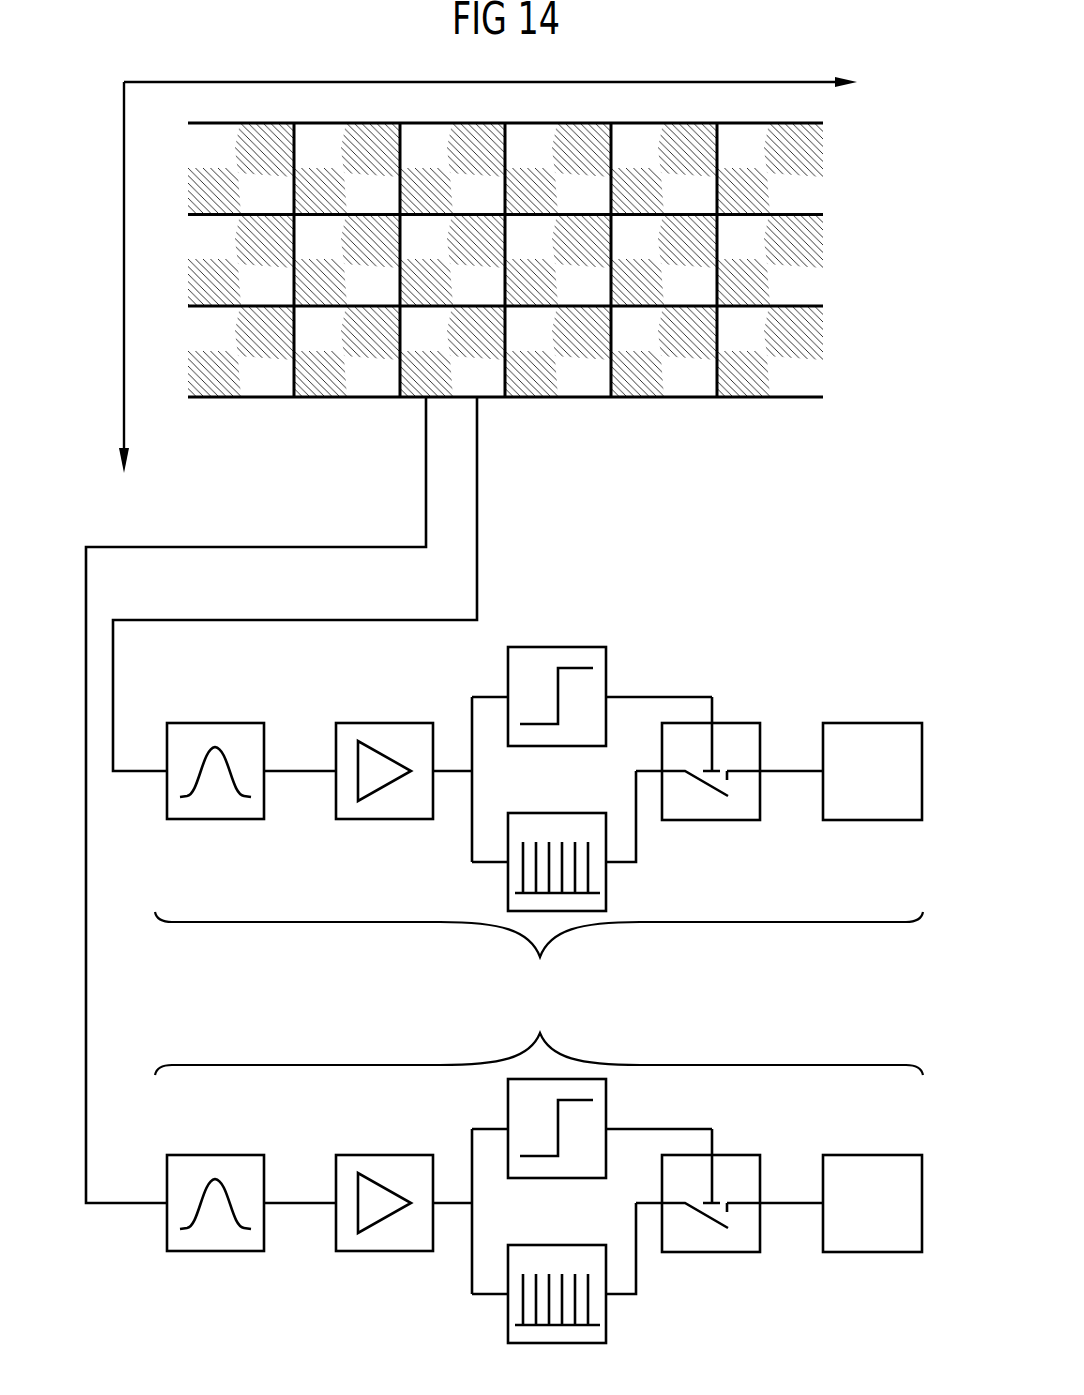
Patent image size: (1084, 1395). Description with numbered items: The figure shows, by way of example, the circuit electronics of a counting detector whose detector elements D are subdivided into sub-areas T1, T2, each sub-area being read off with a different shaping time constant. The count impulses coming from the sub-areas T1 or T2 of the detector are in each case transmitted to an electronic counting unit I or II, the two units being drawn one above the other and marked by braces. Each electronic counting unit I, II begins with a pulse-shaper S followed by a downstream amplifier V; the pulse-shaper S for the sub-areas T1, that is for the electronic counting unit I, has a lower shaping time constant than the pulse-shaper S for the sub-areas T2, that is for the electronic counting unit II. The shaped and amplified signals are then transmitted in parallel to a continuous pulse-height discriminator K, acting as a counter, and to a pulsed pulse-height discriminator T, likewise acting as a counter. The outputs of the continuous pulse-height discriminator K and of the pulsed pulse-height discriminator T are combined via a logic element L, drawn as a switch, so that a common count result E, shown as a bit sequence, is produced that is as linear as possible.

The detector element D is at (662, 397).
The first sub-area T1 is at (480, 378).
The second sub-area T2 is at (423, 380).
The pulse-shaper S is at (232, 1154).
The amplifier V is at (400, 1154).
The continuous pulse-height discriminator K is at (650, 1098).
The pulsed pulse-height discriminator T is at (508, 1316).
The logic element L is at (745, 1155).
The common count result E is at (875, 1155).
The electronic counting unit I is at (539, 954).
The electronic counting unit II is at (539, 1036).